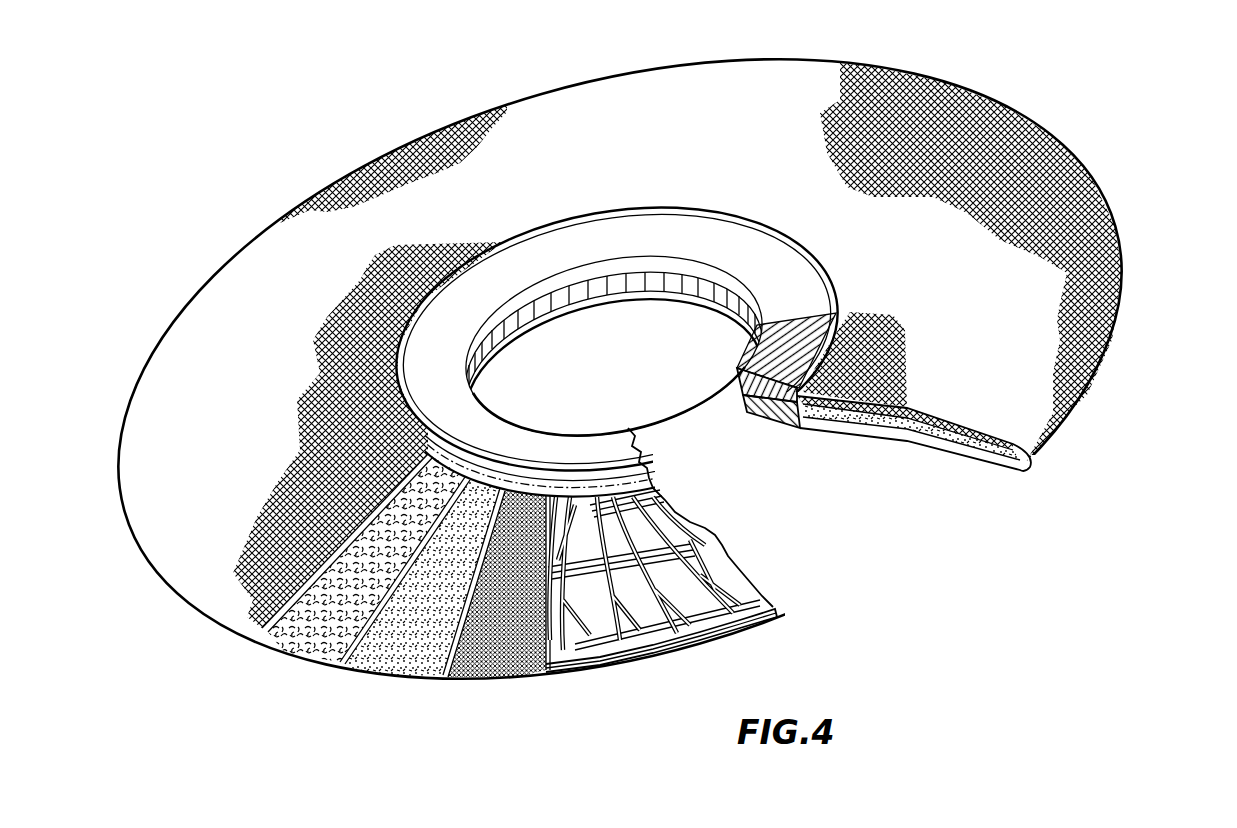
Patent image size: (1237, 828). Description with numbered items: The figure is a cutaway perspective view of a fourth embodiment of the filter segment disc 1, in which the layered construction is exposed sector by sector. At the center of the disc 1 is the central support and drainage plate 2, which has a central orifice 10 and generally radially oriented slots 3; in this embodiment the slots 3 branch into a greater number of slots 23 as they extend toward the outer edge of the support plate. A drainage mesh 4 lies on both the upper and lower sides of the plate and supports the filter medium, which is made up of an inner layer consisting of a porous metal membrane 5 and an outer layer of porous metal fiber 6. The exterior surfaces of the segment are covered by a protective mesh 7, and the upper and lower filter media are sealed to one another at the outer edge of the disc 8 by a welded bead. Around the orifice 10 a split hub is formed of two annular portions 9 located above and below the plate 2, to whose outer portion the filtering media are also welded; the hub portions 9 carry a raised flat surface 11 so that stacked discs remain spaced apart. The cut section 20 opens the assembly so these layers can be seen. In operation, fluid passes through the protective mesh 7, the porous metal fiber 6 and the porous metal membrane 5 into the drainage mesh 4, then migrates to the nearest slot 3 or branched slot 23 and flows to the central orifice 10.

The filter segment disc 1 is at (268, 176).
The central support and drainage plate 2 is at (780, 618).
The slots 3 is at (720, 540).
The drainage mesh 4 is at (480, 683).
The porous metal membrane 5 is at (390, 678).
The porous metal fiber 6 is at (300, 655).
The protective mesh 7 is at (250, 613).
The disc 8 is at (1145, 281).
The annular hub portions 9 is at (742, 407).
The central orifice 10 is at (634, 389).
The raised flat surface 11 is at (482, 425).
The cut section 20 is at (718, 380).
The branched slots 23 is at (730, 567).